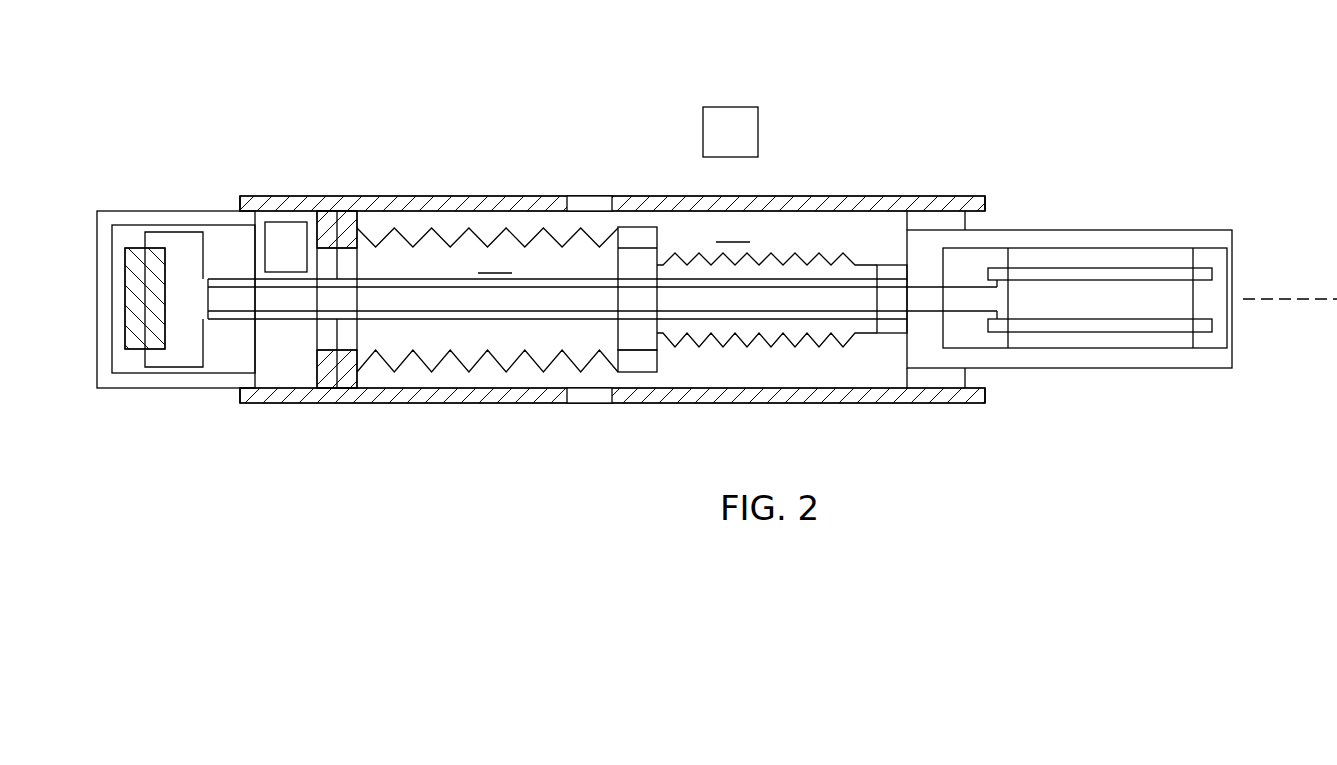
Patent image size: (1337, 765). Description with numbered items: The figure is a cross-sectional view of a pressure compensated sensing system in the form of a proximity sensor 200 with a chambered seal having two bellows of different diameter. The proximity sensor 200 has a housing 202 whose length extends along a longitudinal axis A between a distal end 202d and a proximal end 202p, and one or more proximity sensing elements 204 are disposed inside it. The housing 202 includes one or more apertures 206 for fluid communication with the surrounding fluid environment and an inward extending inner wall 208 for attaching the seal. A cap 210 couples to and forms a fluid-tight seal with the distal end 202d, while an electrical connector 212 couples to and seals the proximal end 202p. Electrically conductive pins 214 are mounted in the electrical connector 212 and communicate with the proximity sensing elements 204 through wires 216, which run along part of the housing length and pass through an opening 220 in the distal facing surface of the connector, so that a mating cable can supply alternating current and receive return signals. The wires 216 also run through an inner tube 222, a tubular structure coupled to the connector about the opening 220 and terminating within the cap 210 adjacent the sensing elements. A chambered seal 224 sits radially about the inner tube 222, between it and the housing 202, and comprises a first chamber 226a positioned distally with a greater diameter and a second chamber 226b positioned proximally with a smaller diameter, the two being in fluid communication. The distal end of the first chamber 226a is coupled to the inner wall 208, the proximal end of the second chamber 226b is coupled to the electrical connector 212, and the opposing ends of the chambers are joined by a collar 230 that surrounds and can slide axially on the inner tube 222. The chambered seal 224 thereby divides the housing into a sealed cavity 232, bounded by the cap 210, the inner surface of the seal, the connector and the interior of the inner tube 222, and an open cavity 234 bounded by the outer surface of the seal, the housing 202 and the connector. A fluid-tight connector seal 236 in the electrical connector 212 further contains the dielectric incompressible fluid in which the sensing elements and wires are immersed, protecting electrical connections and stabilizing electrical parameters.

The proximity sensor 200 is at (384, 84).
The housing 202 is at (478, 196).
The distal end 202d is at (243, 177).
The proximal end 202p is at (977, 177).
The proximity sensing element 204 is at (137, 350).
The aperture 206 is at (592, 196).
The inner wall 208 is at (320, 377).
The cap 210 is at (152, 211).
The electrical connector 212 is at (1097, 233).
The electrically conductive pins 214 is at (1113, 334).
The wires 216 is at (712, 313).
The opening 220 is at (888, 295).
The inner tube 222 is at (862, 333).
The chambered seal 224 is at (640, 355).
The first chamber 226a is at (387, 372).
The second chamber 226b is at (787, 347).
The collar 230 is at (636, 240).
The sealed cavity 232 is at (495, 261).
The open cavity 234 is at (767, 282).
The connector seal 236 is at (1012, 345).
The longitudinal axis A is at (1305, 302).